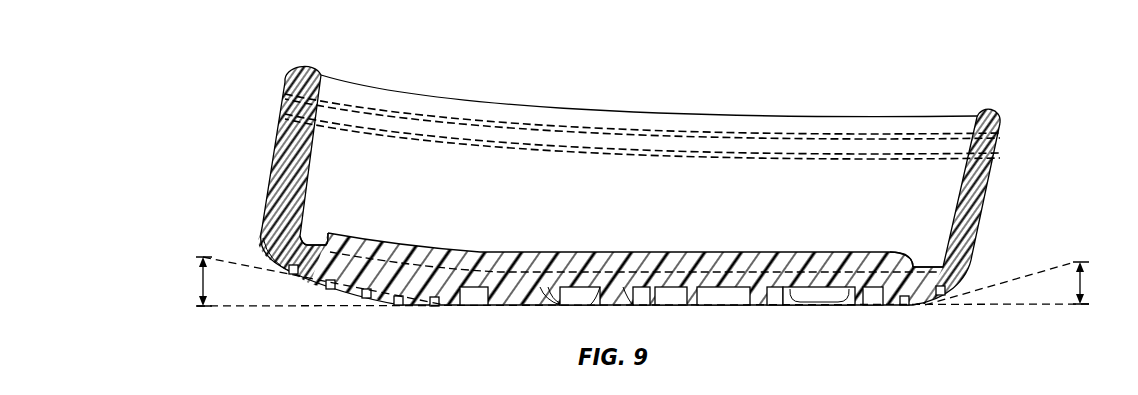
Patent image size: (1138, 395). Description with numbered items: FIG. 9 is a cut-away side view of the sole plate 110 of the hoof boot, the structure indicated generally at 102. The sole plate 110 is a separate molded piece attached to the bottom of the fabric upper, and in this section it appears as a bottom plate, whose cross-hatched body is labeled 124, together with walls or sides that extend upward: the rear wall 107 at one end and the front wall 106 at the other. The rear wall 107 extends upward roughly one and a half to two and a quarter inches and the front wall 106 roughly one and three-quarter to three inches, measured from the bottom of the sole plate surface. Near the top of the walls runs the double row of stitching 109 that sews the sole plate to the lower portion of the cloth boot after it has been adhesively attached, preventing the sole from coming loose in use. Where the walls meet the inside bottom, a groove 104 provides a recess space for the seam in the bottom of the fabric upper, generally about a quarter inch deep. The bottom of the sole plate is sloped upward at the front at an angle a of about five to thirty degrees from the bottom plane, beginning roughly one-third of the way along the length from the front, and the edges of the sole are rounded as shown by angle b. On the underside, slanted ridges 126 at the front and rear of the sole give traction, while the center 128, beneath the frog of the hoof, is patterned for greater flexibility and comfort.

The container body 102 is at (831, 56).
The groove 104 is at (298, 233).
The front wall 106 is at (1029, 90).
The rear wall 107 is at (270, 64).
The double row of stitching 109 is at (1000, 135).
The sole plate 110 is at (275, 163).
The base 124 is at (607, 251).
The slanted ridges 126 is at (430, 304).
The center 128 is at (512, 304).
The angle a is at (196, 282).
The angle b is at (1086, 282).